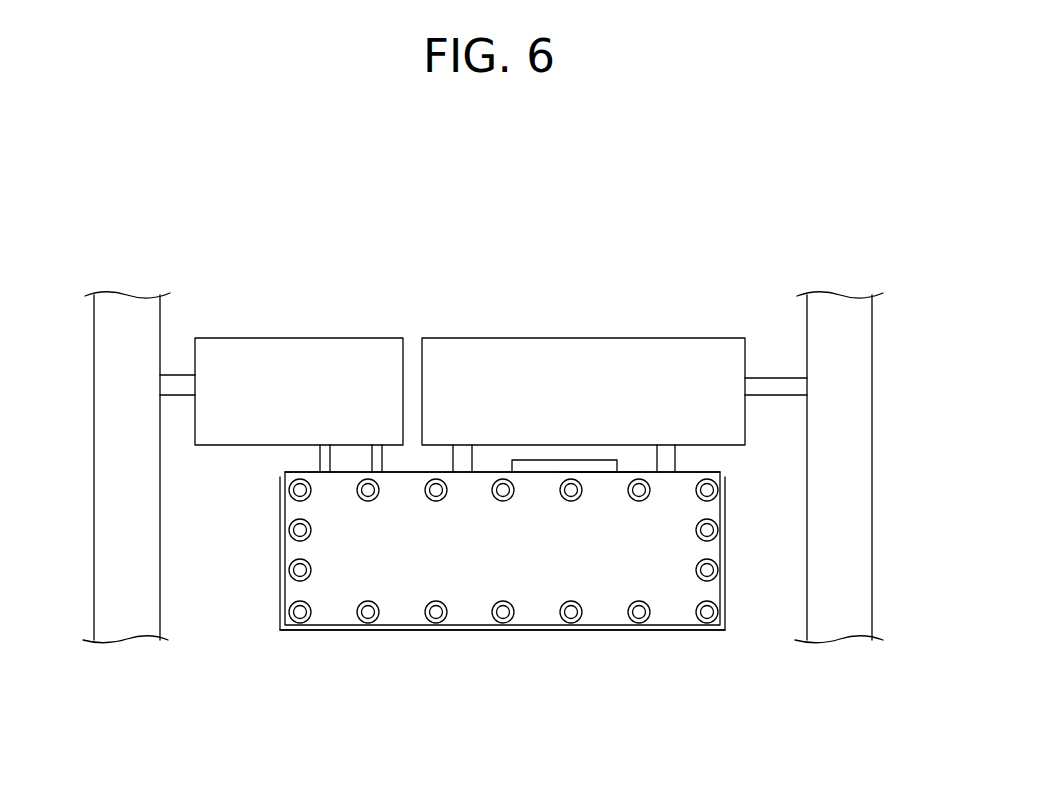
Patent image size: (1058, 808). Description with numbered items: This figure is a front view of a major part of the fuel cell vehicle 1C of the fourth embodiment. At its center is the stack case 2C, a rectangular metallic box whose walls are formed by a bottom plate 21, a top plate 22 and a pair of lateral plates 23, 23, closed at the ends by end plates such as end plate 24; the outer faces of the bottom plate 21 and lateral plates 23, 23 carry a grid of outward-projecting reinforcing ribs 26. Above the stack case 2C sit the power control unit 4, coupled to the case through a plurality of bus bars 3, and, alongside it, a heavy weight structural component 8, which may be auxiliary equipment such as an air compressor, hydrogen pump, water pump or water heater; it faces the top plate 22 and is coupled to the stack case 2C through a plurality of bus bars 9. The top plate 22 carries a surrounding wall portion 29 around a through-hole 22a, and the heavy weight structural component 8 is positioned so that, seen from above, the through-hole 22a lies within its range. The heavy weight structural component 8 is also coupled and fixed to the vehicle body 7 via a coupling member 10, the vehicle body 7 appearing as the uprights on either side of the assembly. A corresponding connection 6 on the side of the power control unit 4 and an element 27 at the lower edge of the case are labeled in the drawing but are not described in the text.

The fuel cell vehicle 1C is at (697, 231).
The stack case 2C is at (665, 631).
The bus bars 3 is at (325, 460).
The power control unit 4 is at (273, 356).
The first connecting pipe 6 is at (178, 388).
The vehicle body 7 is at (107, 372).
The heavy weight structural component 8 is at (680, 356).
The bus bars 9 is at (668, 462).
The coupling member 10 is at (778, 388).
The bottom plate 21 is at (552, 631).
The top plate 22 is at (436, 470).
The through-hole 22a is at (588, 472).
The lateral plates 23 is at (284, 587).
The end plate 24 is at (400, 560).
The reinforcing ribs 26 is at (282, 538).
The fastening bolt 27 is at (367, 623).
The surrounding wall portion 29 is at (525, 470).